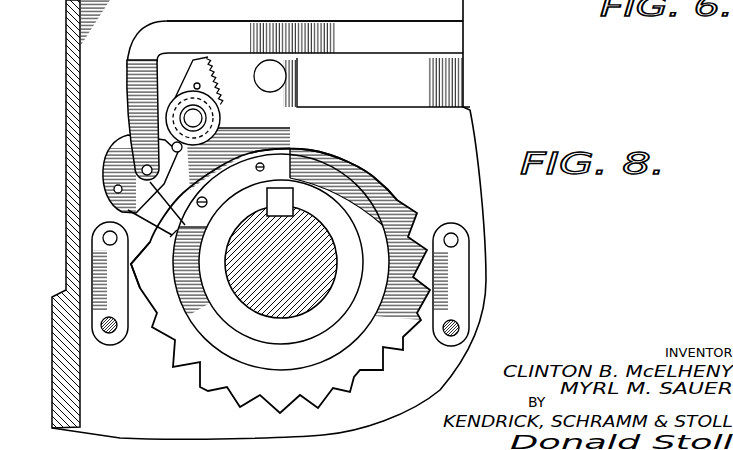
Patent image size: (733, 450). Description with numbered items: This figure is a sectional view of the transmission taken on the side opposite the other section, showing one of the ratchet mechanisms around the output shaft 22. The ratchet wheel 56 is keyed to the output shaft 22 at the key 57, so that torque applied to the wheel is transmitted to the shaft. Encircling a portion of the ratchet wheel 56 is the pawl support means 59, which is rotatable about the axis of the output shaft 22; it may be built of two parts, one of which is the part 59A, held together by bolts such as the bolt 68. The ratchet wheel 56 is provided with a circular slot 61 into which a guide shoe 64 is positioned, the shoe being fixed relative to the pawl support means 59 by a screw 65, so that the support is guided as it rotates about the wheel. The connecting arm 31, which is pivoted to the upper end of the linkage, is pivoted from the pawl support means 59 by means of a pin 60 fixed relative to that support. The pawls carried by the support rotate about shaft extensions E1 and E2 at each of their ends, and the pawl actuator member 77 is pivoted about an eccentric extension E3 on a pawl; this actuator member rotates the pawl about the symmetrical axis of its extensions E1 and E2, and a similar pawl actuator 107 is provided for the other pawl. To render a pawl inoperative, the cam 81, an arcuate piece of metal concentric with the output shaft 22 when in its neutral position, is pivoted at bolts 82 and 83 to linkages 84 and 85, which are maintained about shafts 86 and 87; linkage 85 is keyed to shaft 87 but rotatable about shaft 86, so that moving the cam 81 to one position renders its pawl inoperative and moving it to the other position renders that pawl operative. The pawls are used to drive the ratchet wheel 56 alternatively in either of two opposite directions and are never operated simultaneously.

The output shaft 22 is at (290, 310).
The connecting arm 31 is at (455, 82).
The ratchet wheel 56 is at (202, 356).
The key 57 is at (267, 198).
The pawl support means 59 is at (92, 173).
The pawl support means part 59A is at (300, 75).
The pin 60 is at (268, 60).
The circular slot 61 is at (350, 330).
The guide shoe 64 is at (266, 167).
The screw 65 is at (150, 265).
The bolt 68 is at (114, 190).
The pawl actuator member 77 is at (398, 22).
The cam 81 is at (388, 167).
The bolt 82 is at (458, 240).
The bolt 83 is at (103, 236).
The linkage 84 is at (452, 276).
The linkage 85 is at (100, 272).
The shaft 86 is at (457, 326).
The shaft 87 is at (105, 340).
The pawl actuator 107 is at (228, 132).
The shaft extension E1 is at (137, 166).
The shaft extension E2 is at (222, 103).
The eccentric extension E3 is at (147, 176).